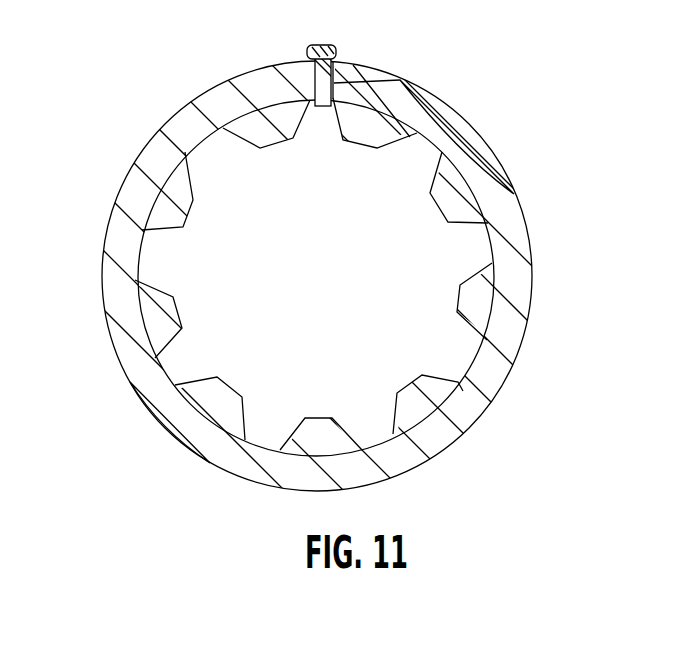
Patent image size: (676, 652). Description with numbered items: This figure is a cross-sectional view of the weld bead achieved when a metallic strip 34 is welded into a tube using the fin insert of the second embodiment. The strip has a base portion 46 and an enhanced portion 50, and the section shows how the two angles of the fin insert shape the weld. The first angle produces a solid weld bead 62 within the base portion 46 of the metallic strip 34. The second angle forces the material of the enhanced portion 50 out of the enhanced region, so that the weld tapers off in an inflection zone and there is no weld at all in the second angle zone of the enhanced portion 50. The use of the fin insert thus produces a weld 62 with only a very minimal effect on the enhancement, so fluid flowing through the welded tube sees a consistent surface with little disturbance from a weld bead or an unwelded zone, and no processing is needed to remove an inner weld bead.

The metallic strip 34 is at (338, 326).
The base portion 46 is at (338, 326).
The enhanced portion 50 is at (181, 193).
The weld bead 62 is at (337, 66).